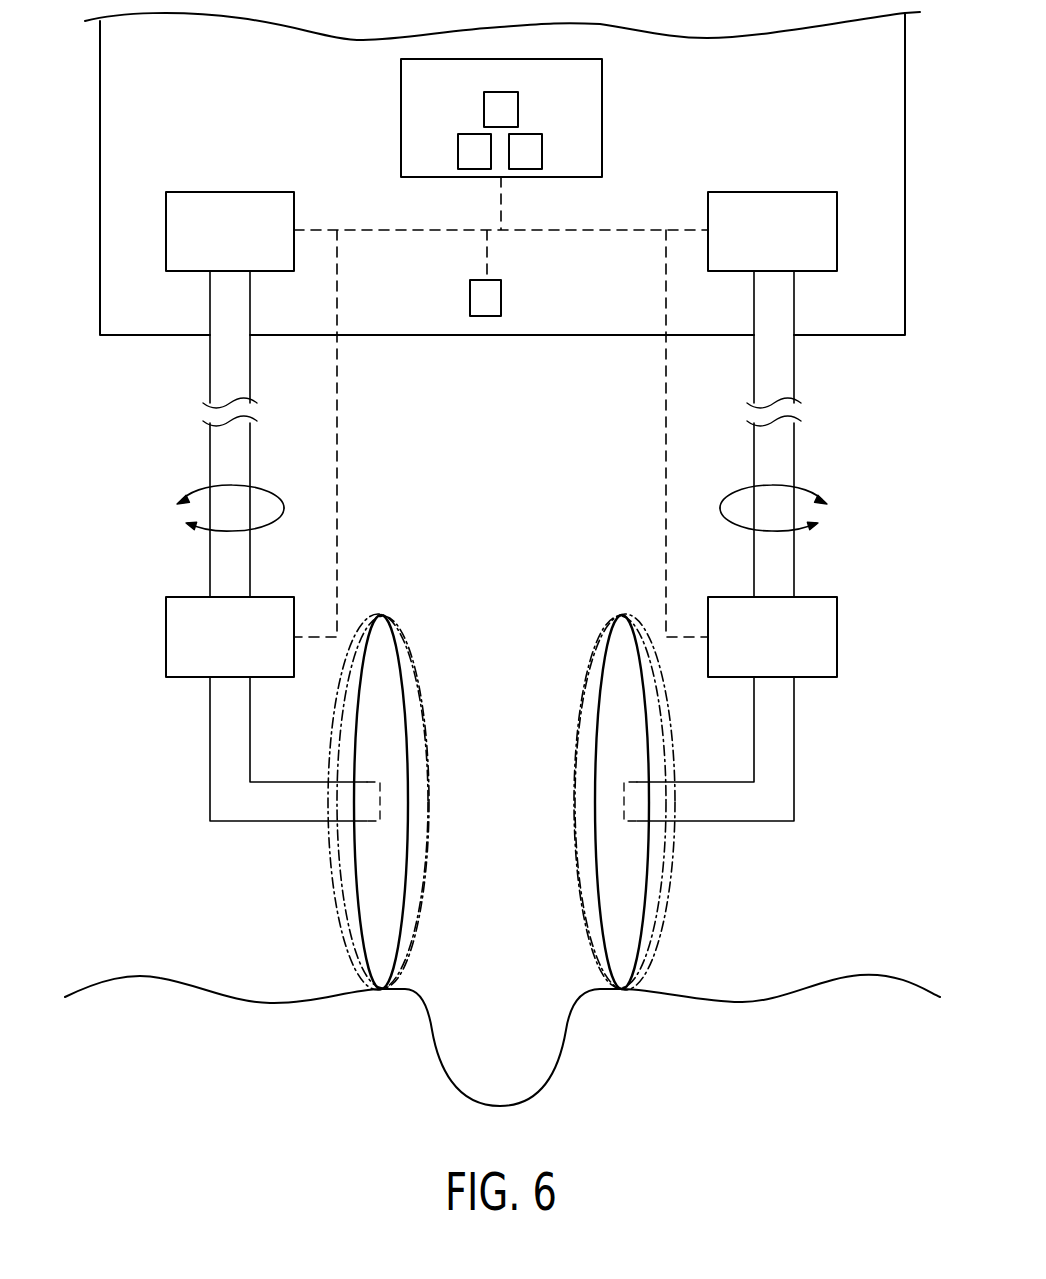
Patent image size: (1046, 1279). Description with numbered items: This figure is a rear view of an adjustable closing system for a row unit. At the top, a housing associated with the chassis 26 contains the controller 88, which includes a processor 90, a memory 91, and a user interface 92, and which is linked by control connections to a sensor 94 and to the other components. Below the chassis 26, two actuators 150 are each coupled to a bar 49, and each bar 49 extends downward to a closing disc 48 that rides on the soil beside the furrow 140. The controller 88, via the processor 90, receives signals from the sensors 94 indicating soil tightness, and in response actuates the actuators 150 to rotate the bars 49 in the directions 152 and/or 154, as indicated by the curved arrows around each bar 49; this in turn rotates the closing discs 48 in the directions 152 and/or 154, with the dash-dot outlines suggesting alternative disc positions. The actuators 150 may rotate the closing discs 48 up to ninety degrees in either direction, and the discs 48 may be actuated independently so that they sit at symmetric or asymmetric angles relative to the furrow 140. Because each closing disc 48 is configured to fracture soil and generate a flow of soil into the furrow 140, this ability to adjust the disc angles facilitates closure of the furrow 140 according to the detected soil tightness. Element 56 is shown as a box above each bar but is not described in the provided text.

The chassis 26 is at (120, 252).
The closing disc 48 is at (354, 895).
The bar 49 is at (210, 748).
The actuator 56 is at (232, 192).
The controller 88 is at (401, 90).
The processor 90 is at (458, 153).
The memory 91 is at (542, 153).
The user interface 92 is at (518, 110).
The sensor 94 is at (501, 297).
The furrow 140 is at (449, 1109).
The actuator 150 is at (166, 637).
The direction 152 is at (265, 527).
The direction 154 is at (270, 490).